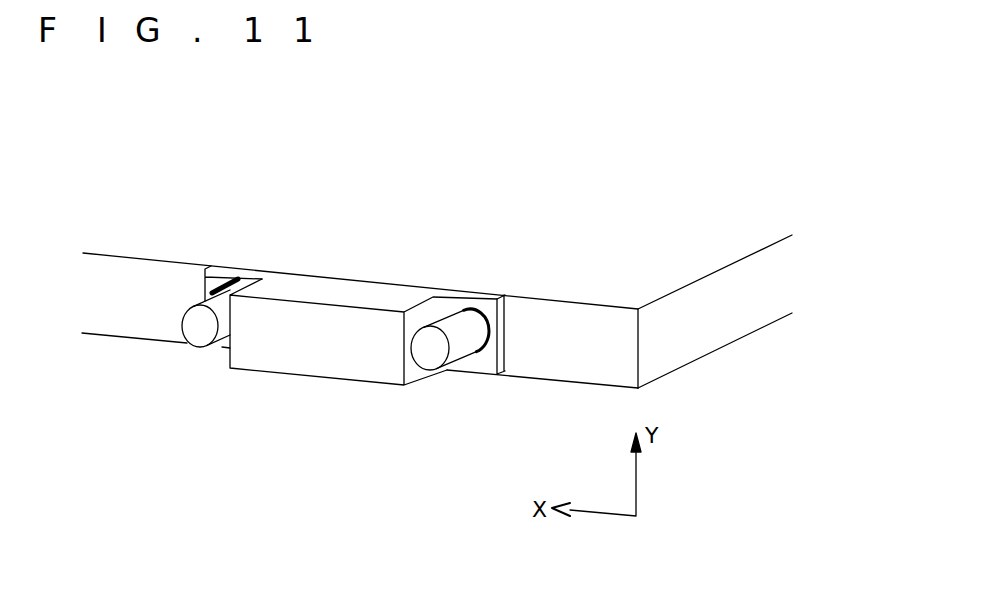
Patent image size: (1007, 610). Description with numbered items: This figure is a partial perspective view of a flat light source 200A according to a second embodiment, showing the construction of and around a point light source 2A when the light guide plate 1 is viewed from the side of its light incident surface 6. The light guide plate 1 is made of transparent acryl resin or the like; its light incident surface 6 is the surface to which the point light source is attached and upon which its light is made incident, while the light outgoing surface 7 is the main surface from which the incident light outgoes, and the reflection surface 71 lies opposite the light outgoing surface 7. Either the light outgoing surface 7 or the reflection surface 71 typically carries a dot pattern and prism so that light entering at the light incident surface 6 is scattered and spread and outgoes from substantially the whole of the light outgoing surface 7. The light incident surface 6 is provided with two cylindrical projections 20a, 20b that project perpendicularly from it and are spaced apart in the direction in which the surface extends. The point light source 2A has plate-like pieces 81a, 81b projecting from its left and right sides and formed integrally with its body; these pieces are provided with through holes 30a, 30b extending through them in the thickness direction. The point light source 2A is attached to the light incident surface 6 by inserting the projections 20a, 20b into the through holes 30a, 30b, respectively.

The roller support structure 200A is at (437, 285).
The light outgoing surface 7 is at (605, 235).
The light guide plate 1 is at (738, 305).
The reflection surface 71 is at (690, 365).
The light incident surface 6 is at (125, 305).
The point light source 2A is at (313, 354).
The cylindrical projection 20a is at (450, 328).
The cylindrical projection 20b is at (200, 330).
The through hole 30a is at (455, 317).
The through hole 30b is at (222, 289).
The plate-like piece 81a is at (488, 364).
The plate-like piece 81b is at (205, 284).